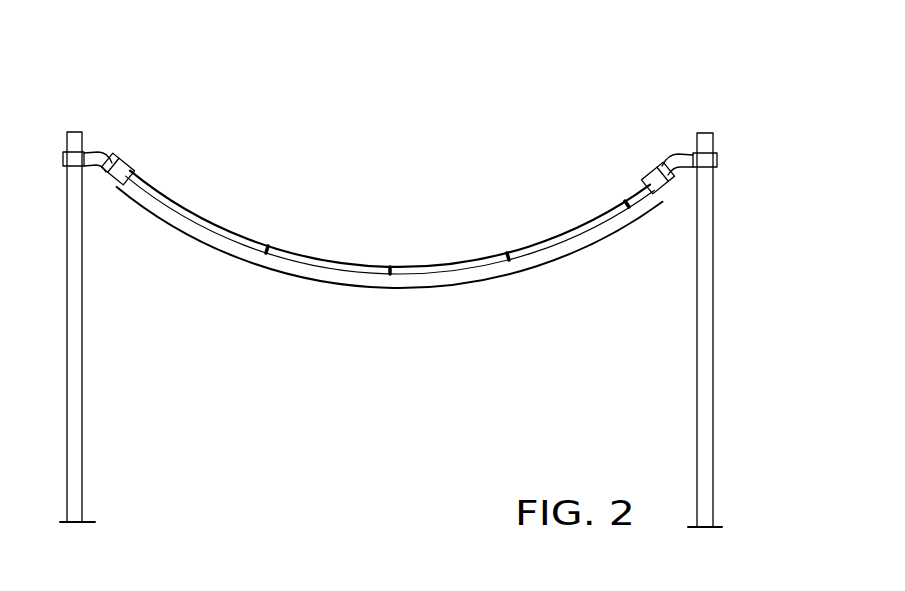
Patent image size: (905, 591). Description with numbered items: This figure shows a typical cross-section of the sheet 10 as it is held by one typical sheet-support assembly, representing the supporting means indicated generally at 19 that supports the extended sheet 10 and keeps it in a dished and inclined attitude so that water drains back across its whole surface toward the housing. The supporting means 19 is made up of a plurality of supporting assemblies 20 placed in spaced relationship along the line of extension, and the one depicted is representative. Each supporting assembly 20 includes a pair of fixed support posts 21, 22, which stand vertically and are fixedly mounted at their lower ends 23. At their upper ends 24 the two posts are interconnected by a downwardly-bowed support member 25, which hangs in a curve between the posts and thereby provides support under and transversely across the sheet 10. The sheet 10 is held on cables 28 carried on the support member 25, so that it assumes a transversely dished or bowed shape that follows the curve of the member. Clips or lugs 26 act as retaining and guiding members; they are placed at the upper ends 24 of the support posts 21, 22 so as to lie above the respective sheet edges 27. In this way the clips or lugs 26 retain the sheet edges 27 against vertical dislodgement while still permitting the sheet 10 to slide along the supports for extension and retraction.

The sheet 10 is at (257, 245).
The supporting means 19 is at (672, 93).
The supporting assembly 20 is at (547, 262).
The fixed support post 21 is at (76, 338).
The fixed support post 22 is at (693, 311).
The lower ends 23 is at (78, 517).
The upper ends 24 is at (70, 138).
The downwardly-bowed support member 25 is at (347, 290).
The clips or lugs 26 is at (131, 168).
The sheet edges 27 is at (130, 176).
The cables 28 is at (268, 250).